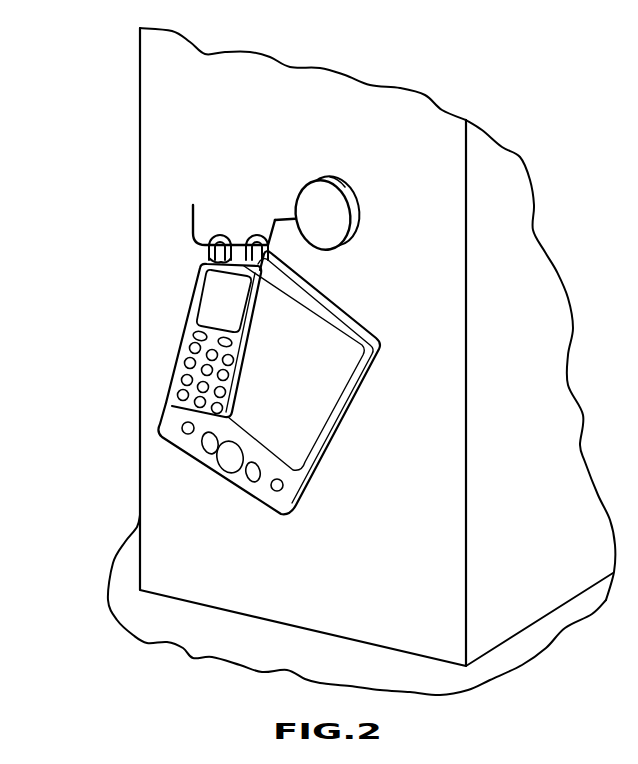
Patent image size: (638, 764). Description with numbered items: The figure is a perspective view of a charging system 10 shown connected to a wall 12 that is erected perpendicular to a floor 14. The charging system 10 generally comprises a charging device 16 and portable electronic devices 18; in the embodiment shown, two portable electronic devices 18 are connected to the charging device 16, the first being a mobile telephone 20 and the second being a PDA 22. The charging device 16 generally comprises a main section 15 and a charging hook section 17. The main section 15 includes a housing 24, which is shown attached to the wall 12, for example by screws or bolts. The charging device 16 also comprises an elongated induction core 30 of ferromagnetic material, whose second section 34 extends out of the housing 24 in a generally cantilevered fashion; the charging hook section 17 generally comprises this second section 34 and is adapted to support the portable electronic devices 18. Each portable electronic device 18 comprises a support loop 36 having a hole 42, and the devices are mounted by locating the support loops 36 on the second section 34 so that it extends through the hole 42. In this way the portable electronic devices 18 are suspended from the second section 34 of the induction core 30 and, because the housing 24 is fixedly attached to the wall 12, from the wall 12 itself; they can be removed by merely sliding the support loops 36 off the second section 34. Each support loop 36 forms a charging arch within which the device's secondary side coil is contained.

The charging system 10 is at (90, 164).
The wall 12 is at (152, 80).
The floor 14 is at (153, 615).
The main section 15 is at (358, 233).
The charging device 16 is at (348, 197).
The charging hook section 17 is at (192, 206).
The portable electronic device 18 is at (175, 387).
The mobile telephone 20 is at (217, 293).
The PDA 22 is at (213, 470).
The housing 24 is at (345, 187).
The induction core 30 is at (277, 216).
The second section 34 is at (208, 243).
The support loop 36 is at (250, 220).
The hole 42 is at (210, 262).